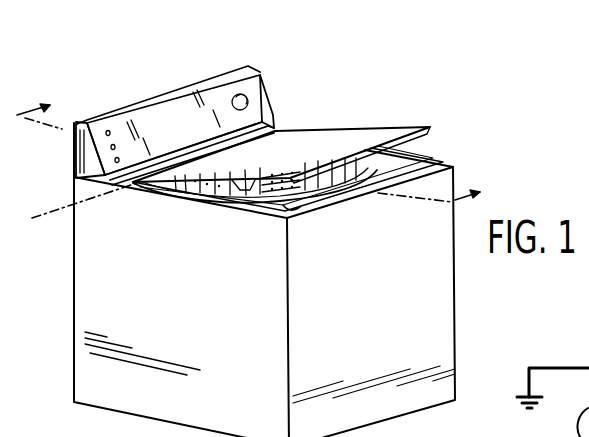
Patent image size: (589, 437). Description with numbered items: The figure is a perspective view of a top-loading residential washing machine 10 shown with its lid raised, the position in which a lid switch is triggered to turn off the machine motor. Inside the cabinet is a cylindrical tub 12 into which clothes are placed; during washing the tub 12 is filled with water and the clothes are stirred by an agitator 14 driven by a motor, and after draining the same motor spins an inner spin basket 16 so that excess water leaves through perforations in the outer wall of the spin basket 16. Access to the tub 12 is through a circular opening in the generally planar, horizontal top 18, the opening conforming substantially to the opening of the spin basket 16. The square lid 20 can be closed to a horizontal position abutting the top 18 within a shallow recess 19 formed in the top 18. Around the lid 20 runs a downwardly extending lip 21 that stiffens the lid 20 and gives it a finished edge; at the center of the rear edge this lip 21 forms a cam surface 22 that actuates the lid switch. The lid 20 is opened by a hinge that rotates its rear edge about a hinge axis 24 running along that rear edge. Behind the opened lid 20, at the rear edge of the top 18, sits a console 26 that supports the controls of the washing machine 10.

The top-loading washing machine 10 is at (482, 128).
The cylindrical tub 12 is at (423, 160).
The agitator 14 is at (227, 202).
The inner spin basket 16 is at (410, 150).
The top 18 is at (127, 183).
The shallow recess 19 is at (294, 203).
The lid 20 is at (343, 142).
The downwardly extending lip 21 is at (413, 127).
The cam surface 22 is at (203, 135).
The hinge axis 24 is at (60, 200).
The console 26 is at (247, 70).